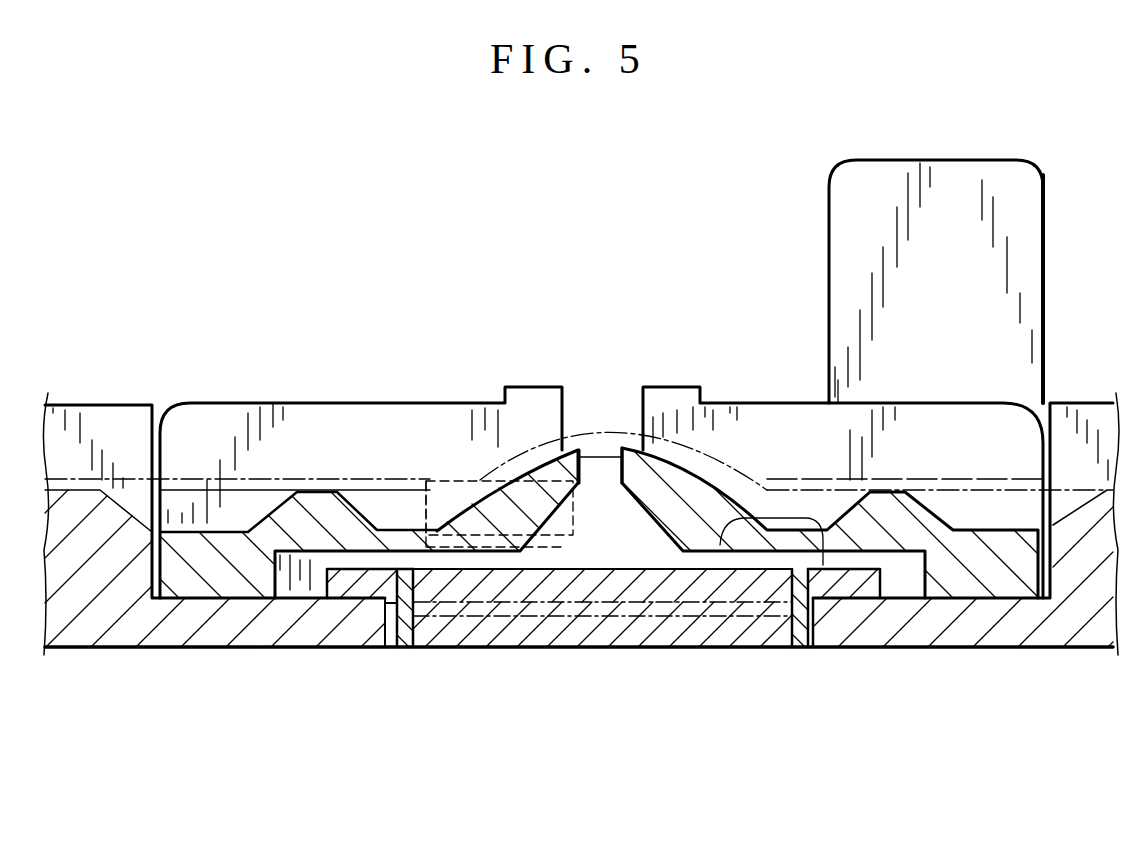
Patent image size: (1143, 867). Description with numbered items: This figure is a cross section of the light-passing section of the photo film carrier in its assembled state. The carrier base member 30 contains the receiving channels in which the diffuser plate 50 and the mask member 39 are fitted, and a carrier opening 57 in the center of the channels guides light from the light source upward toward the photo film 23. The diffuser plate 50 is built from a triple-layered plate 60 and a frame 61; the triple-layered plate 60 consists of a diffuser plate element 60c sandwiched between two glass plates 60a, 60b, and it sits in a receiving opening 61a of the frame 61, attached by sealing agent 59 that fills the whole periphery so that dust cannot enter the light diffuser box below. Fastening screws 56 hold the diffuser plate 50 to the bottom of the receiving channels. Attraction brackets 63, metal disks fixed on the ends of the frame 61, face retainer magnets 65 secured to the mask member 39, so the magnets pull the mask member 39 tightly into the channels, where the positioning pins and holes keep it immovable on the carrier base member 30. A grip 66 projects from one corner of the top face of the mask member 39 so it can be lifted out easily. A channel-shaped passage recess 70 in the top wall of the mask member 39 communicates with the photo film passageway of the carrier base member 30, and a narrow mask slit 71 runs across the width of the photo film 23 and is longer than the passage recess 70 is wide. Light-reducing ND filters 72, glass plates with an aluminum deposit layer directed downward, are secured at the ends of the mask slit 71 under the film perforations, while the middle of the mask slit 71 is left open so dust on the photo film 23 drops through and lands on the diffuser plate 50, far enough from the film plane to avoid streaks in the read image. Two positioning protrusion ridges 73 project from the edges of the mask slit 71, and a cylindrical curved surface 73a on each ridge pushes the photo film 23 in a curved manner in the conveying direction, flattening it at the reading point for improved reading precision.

The photo film 23 is at (985, 478).
The carrier base member 30 is at (157, 648).
The mask member 39 is at (447, 376).
The diffuser plate 50 is at (605, 536).
The fastening screws 56 is at (773, 513).
The carrier opening 57 is at (813, 650).
The sealing agent 59 is at (405, 648).
The triple-layered plate 60 is at (695, 746).
The glass plate 60a is at (655, 600).
The glass plate 60b is at (500, 627).
The diffuser plate element 60c is at (578, 605).
The frame 61 is at (342, 578).
The receiving opening 61a is at (400, 648).
The attraction brackets 63 is at (405, 515).
The retainer magnets 65 is at (398, 547).
The grip 66 is at (933, 180).
The passage recess 70 is at (913, 403).
The mask slit 71 is at (578, 448).
The ND filters 72 is at (621, 447).
The positioning protrusion ridges 73 is at (533, 434).
The cylindrical curved surface 73a is at (480, 478).